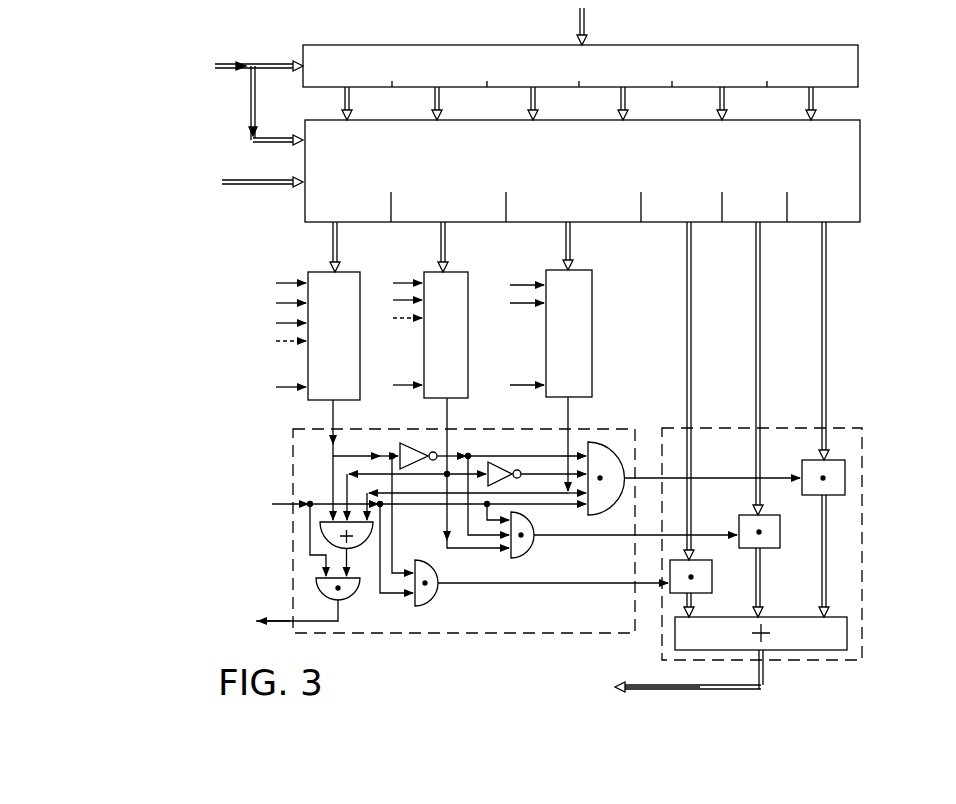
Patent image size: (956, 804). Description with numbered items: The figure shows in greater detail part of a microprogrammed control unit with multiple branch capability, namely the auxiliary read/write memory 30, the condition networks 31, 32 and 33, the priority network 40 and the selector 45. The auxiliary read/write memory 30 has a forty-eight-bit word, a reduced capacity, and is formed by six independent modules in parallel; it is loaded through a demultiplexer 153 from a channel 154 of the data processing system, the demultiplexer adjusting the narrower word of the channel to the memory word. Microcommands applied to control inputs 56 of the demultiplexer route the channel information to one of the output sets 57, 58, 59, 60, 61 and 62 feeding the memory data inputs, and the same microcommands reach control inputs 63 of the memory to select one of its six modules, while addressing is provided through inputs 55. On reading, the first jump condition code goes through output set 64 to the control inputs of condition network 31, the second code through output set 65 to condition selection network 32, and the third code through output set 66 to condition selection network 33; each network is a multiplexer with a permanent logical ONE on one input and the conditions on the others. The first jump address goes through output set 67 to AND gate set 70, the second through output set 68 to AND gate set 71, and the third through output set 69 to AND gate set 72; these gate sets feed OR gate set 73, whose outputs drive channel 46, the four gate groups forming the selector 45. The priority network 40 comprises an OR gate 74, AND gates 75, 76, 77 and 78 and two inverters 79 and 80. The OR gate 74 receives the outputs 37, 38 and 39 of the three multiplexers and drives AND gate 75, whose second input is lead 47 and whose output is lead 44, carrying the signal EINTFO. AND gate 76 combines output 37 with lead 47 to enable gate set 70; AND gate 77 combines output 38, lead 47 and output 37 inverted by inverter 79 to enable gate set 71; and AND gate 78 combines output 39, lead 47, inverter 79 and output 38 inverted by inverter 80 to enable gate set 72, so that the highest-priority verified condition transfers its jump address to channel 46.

The demultiplexer 153 is at (698, 50).
The channel 154 is at (588, 20).
The control inputs 56 is at (298, 58).
The control inputs 63 is at (300, 138).
The inputs 55 is at (243, 173).
The auxiliary read/write memory 30 is at (302, 198).
The output set 57 is at (352, 92).
The output set 58 is at (442, 92).
The output set 59 is at (538, 92).
The output set 60 is at (628, 92).
The output set 61 is at (727, 92).
The output set 62 is at (816, 92).
The output set 64 is at (340, 228).
The output set 65 is at (448, 228).
The output set 66 is at (573, 228).
The output set 67 is at (693, 228).
The output set 68 is at (762, 228).
The output set 69 is at (828, 228).
The condition network 31 is at (362, 273).
The condition selection network 32 is at (476, 273).
The condition selection network 33 is at (588, 271).
The output 37 is at (336, 404).
The output 38 is at (450, 402).
The output 39 is at (571, 401).
The priority network 40 is at (618, 425).
The selector 45 is at (710, 425).
The lead 47 is at (275, 500).
The lead 44 is at (280, 612).
The channel 46 is at (642, 684).
The AND gate set 70 is at (718, 572).
The AND gate set 71 is at (790, 525).
The AND gate set 72 is at (832, 498).
The OR gate set 73 is at (778, 616).
The OR gate 74 is at (360, 550).
The AND gate 75 is at (346, 602).
The AND gate 76 is at (436, 600).
The AND gate 77 is at (532, 552).
The AND gate 78 is at (612, 510).
The inverter 79 is at (402, 446).
The inverter 80 is at (514, 458).